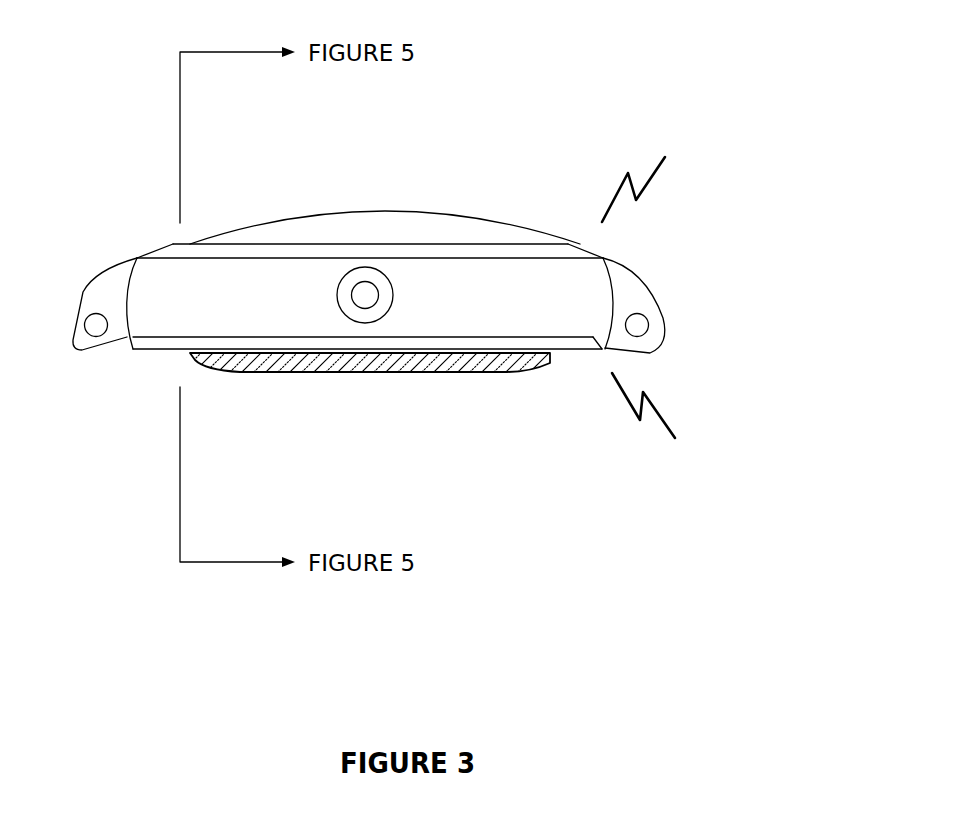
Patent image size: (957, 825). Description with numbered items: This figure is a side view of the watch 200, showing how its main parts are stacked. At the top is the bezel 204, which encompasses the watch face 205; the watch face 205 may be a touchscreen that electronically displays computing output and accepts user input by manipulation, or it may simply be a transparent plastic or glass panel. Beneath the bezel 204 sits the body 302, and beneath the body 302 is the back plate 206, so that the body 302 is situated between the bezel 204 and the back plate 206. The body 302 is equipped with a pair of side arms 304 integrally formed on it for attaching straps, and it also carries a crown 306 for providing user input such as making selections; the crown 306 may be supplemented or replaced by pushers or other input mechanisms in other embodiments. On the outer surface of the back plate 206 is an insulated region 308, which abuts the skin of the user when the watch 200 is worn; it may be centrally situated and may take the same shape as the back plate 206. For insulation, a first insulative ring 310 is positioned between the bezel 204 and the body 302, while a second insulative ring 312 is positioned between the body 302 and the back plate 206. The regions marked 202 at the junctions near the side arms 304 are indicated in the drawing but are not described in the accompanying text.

The watch 200 is at (467, 194).
The gap / radiating slot 202 is at (614, 252).
The bezel 204 is at (553, 253).
The watch face 205 is at (268, 228).
The back plate 206 is at (583, 342).
The body 302 is at (160, 313).
The side arms 304 is at (112, 267).
The crown 306 is at (337, 297).
The insulated region 308 is at (397, 372).
The first insulative ring 310 is at (577, 257).
The second insulative ring 312 is at (182, 337).